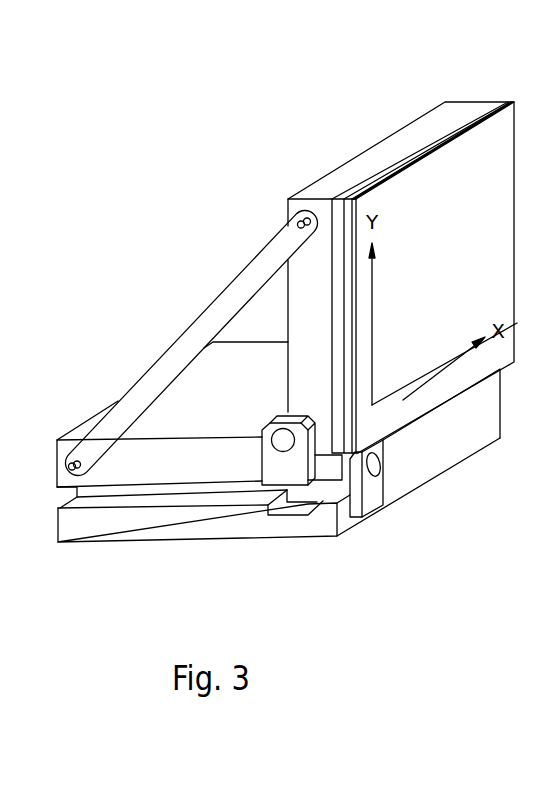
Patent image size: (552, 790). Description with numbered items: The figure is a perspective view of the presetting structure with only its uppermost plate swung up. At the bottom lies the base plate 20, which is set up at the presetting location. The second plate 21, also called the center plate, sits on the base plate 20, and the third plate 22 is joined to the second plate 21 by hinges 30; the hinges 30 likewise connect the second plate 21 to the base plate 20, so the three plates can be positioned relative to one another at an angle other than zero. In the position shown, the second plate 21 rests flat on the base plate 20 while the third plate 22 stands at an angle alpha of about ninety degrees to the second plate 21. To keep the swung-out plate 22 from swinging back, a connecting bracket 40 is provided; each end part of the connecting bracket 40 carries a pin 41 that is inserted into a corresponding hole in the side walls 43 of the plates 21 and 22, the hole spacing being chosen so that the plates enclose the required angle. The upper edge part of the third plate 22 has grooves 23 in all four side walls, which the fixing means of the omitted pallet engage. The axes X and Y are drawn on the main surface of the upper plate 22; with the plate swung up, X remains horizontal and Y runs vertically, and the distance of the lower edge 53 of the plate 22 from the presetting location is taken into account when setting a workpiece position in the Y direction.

The base plate 20 is at (97, 525).
The second plate 21 is at (77, 427).
The third plate 22 is at (418, 137).
The grooves 23 is at (484, 113).
The hinges 30 is at (280, 470).
The connecting bracket 40 is at (263, 270).
The pin 41 is at (301, 218).
The side walls 43 is at (148, 528).
The lower edge 53 is at (428, 413).